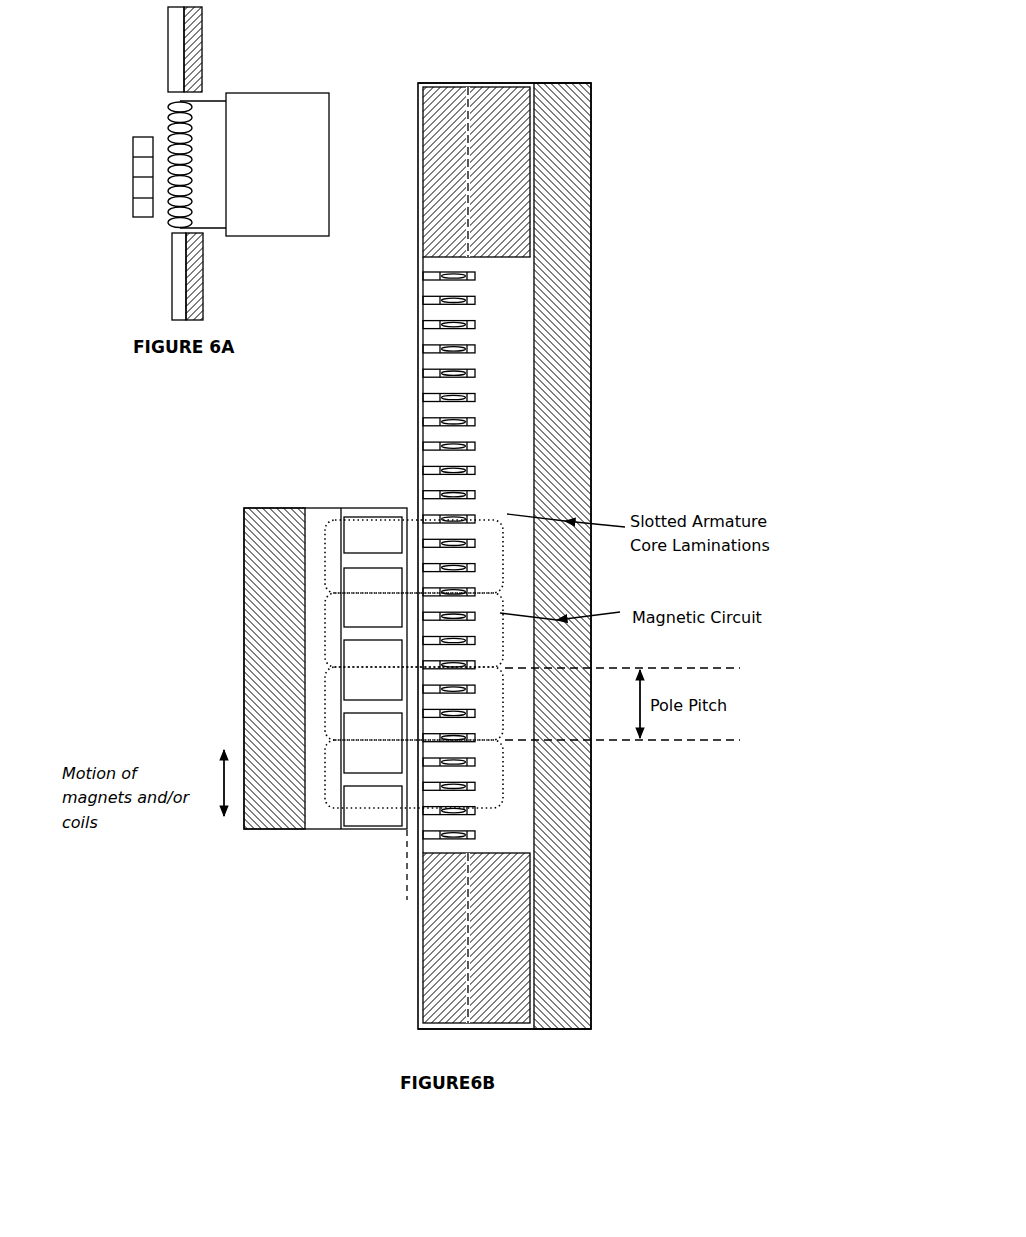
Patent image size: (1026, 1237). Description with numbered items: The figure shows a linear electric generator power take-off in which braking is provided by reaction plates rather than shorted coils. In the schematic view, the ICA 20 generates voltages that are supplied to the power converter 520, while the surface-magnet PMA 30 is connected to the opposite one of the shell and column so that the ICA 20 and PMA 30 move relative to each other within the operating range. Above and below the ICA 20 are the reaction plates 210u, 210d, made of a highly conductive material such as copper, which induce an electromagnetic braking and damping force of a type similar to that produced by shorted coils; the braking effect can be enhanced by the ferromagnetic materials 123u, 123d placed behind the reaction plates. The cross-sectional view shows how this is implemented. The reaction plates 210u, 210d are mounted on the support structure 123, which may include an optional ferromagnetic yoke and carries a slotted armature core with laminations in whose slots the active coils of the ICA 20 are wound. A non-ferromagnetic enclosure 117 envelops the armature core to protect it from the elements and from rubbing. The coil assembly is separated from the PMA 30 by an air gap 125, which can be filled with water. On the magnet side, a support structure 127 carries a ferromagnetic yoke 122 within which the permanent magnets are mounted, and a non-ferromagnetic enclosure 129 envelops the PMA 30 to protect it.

In FIG. 6A, the ICA 20 is at (167, 124).
In FIG. 6B, the ICA 20 is at (473, 422).
In FIG. 6A, the PMA 30 is at (133, 172).
In FIG. 6B, the PMA 30 is at (363, 578).
In FIG. 6B, the non-ferromagnetic enclosure 117 is at (420, 457).
In FIG. 6B, the ferromagnetic yoke 122 is at (313, 683).
In FIG. 6B, the support structure 123 is at (565, 287).
In FIG. 6A, the ferromagnetic material 123u is at (200, 55).
In FIG. 6B, the ferromagnetic material 123u is at (495, 82).
In FIG. 6A, the ferromagnetic material 123d is at (203, 272).
In FIG. 6B, the ferromagnetic material 123d is at (508, 989).
In FIG. 6B, the air gap 125 is at (408, 861).
In FIG. 6B, the support structure 127 is at (273, 732).
In FIG. 6B, the non-ferromagnetic enclosure 129 is at (350, 829).
In FIG. 6A, the reaction plate 210u is at (177, 62).
In FIG. 6B, the reaction plate 210u is at (573, 171).
In FIG. 6A, the reaction plate 210d is at (177, 255).
In FIG. 6B, the reaction plate 210d is at (450, 940).
In FIG. 6A, the power converter 520 is at (268, 92).